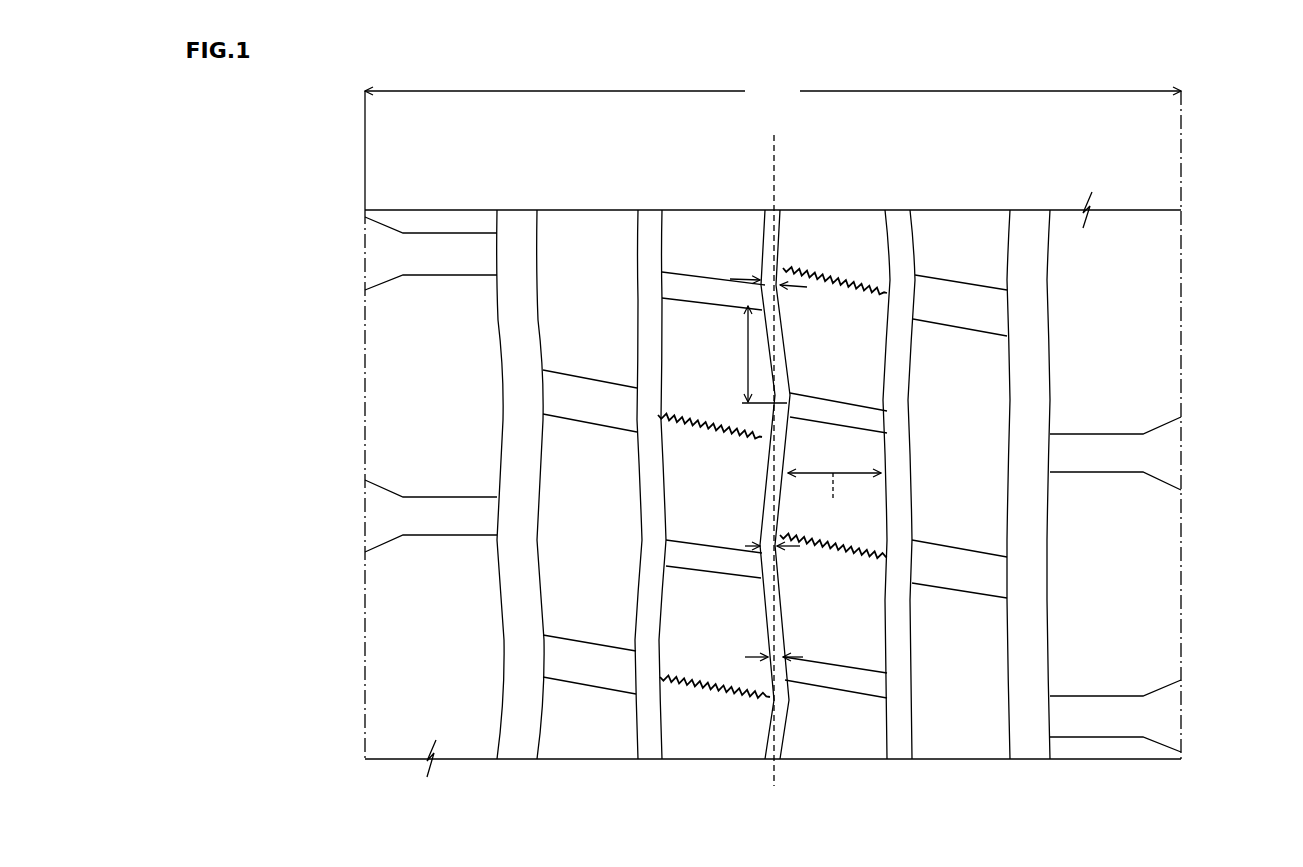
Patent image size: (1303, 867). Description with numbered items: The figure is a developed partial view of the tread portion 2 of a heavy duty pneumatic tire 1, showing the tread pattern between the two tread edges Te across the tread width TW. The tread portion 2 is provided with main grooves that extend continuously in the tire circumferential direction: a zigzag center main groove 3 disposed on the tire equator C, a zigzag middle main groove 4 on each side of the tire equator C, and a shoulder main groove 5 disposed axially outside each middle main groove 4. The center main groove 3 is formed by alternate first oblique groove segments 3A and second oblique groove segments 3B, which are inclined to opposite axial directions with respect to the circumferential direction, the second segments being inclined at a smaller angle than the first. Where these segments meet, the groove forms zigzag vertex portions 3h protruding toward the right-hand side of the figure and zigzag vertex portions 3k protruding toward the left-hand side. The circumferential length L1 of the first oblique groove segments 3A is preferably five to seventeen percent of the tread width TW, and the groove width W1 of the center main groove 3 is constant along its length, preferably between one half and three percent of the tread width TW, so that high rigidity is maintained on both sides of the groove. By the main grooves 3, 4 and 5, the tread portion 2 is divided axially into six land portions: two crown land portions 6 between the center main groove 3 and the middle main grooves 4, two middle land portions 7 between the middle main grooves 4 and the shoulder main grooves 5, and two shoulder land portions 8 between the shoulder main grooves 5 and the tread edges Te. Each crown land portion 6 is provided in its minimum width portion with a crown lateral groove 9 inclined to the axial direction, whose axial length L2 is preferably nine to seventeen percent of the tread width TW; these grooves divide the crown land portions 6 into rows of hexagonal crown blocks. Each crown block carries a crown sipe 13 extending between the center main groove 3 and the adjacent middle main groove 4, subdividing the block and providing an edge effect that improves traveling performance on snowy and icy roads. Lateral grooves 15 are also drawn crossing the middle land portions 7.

The heavy duty pneumatic tire 1 is at (1253, 141).
The tread portion 2 is at (1198, 169).
The center main groove 3 is at (778, 226).
The first oblique groove segments 3A is at (783, 363).
The second oblique groove segments 3B is at (782, 452).
The zigzag vertex portions 3h is at (880, 391).
The zigzag vertex portions 3k is at (773, 550).
The middle main groove 4 is at (648, 230).
The shoulder main groove 5 is at (518, 230).
The crown land portions 6 is at (705, 230).
The middle land portions 7 is at (587, 230).
The shoulder land portions 8 is at (443, 290).
The crown lateral groove 9 is at (688, 555).
The crown sipe 13 is at (735, 650).
The middle lateral groove 15 is at (637, 430).
The tread edges Te is at (365, 270).
The tread width TW is at (773, 145).
The tire equator C is at (772, 449).
The groove width W1 is at (764, 277).
The circumferential length L1 is at (743, 352).
The axial length L2 is at (833, 473).